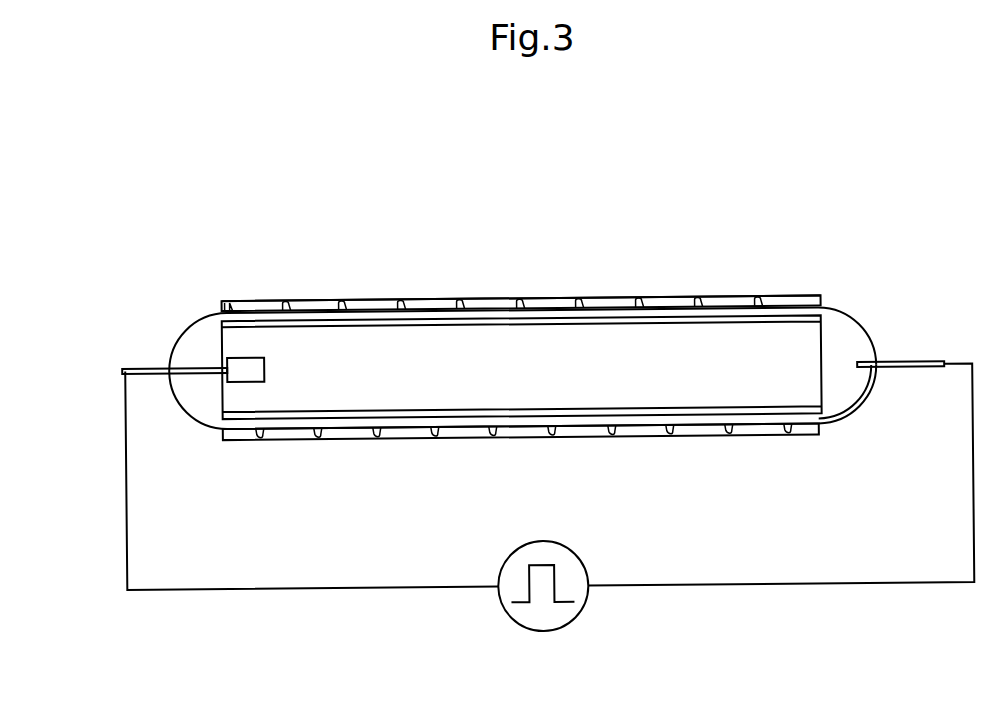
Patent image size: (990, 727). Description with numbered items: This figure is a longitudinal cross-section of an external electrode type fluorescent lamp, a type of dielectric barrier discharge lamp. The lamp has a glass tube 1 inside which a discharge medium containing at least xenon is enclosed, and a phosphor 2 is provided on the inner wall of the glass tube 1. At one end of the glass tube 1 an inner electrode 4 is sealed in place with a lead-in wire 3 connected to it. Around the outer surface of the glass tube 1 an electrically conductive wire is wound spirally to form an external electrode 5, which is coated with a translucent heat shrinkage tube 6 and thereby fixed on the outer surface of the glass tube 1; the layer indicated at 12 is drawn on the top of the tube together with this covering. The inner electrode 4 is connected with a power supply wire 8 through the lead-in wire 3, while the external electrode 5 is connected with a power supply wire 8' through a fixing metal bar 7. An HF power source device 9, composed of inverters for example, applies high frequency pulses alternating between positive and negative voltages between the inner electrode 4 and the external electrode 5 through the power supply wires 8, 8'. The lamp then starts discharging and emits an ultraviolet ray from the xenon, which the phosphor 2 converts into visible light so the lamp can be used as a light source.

The glass tube 1 is at (199, 314).
The phosphor 2 is at (582, 410).
The lead-in wire 3 is at (137, 363).
The inner electrode 4 is at (266, 367).
The external electrode 5 is at (703, 297).
The translucent heat shrinkage tube 6 is at (430, 297).
The fixing metal bar 7 is at (908, 364).
The power supply wire 8 is at (312, 521).
The power supply wire 8' is at (780, 513).
The HF power source device 9 is at (545, 631).
The dielectric layer 12 is at (314, 295).